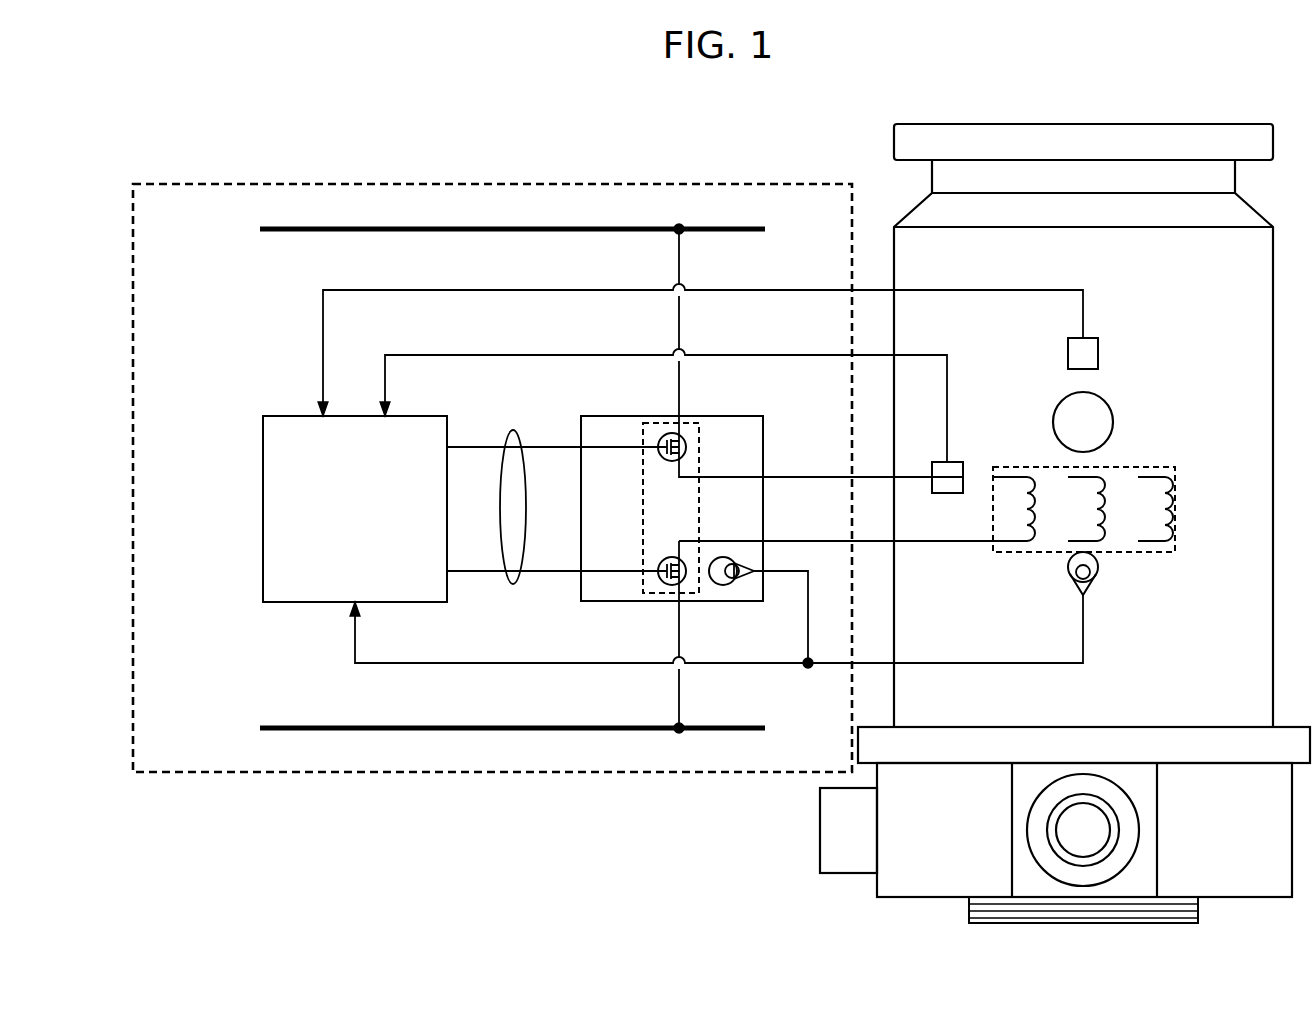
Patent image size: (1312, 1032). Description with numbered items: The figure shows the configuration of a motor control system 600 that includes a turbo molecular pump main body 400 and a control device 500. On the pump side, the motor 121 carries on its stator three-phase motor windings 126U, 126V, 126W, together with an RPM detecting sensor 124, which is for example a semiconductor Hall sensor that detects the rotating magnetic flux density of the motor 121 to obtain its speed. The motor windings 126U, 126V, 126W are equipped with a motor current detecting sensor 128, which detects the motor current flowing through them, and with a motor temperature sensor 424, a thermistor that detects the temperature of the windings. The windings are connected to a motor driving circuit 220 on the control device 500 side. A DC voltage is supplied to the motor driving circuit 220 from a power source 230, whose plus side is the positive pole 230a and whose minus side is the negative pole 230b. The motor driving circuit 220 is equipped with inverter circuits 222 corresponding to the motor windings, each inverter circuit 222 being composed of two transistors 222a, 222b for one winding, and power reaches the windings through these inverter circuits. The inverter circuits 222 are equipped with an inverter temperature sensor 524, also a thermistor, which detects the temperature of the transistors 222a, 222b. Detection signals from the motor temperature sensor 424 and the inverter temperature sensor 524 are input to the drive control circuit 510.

The motor control system 600 is at (508, 155).
The control device 500 is at (823, 222).
The turbo molecular pump main body 400 is at (1145, 277).
The power source 230 is at (236, 234).
The positive pole 230a is at (298, 232).
The negative pole 230b is at (300, 725).
The drive control circuit 510 is at (263, 512).
The motor driving circuit 220 is at (740, 416).
The inverter circuit 222 is at (633, 521).
The transistor 222a is at (658, 437).
The transistor 222b is at (658, 585).
The inverter temperature sensor 524 is at (723, 586).
The RPM detecting sensor 124 is at (1098, 353).
The motor 121 is at (1112, 414).
The motor current detecting sensor 128 is at (958, 464).
The motor winding 126U is at (1025, 553).
The motor winding 126V is at (1100, 488).
The motor winding 126W is at (1168, 553).
The motor temperature sensor 424 is at (1100, 578).